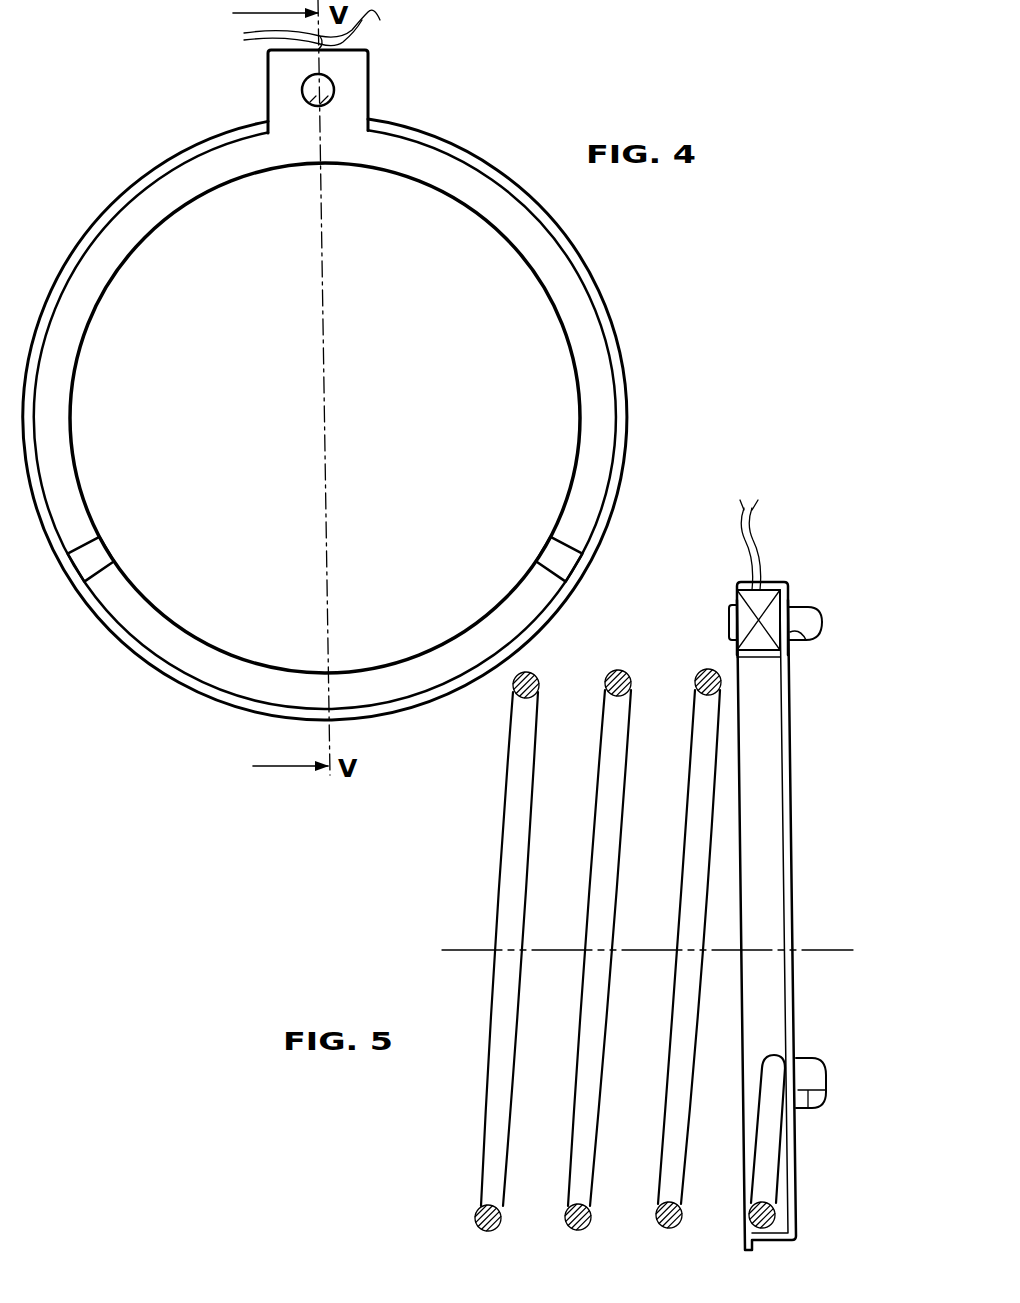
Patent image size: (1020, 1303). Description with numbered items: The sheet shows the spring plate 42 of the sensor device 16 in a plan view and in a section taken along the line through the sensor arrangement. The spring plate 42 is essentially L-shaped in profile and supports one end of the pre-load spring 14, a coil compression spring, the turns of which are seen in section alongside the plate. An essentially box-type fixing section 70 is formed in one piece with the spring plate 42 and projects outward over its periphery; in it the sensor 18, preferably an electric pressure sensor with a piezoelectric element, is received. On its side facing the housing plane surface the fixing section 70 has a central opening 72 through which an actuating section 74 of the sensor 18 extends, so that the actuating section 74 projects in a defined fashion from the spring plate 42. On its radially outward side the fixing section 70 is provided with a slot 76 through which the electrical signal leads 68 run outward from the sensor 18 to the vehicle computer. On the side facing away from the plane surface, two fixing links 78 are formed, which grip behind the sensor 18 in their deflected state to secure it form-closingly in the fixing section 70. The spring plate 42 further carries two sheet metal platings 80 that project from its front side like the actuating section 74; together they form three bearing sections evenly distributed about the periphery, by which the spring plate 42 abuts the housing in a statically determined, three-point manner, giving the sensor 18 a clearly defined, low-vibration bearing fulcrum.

In FIG. 5, the pre-load spring 14 is at (496, 848).
In FIG. 4, the sensor device 16 is at (380, 96).
In FIG. 5, the sensor device 16 is at (776, 579).
In FIG. 5, the sensor 18 is at (748, 612).
In FIG. 4, the spring plate 42 is at (503, 243).
In FIG. 5, the spring plate 42 is at (800, 1213).
In FIG. 4, the signal leads 68 is at (297, 30).
In FIG. 5, the signal leads 68 is at (746, 538).
In FIG. 4, the fixing section 70 is at (290, 99).
In FIG. 5, the fixing section 70 is at (792, 591).
In FIG. 4, the central opening 72 is at (323, 100).
In FIG. 5, the central opening 72 is at (800, 634).
In FIG. 4, the actuating section 74 is at (311, 101).
In FIG. 5, the actuating section 74 is at (805, 619).
In FIG. 5, the slot 76 is at (736, 589).
In FIG. 5, the fixing links 78 is at (732, 624).
In FIG. 4, the sheet metal platings 80 is at (93, 556).
In FIG. 5, the sheet metal platings 80 is at (808, 1076).